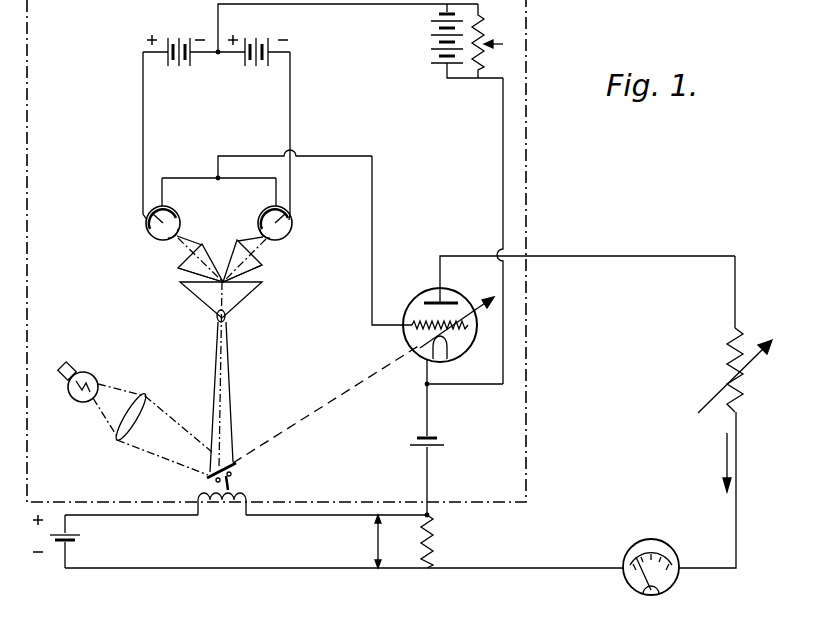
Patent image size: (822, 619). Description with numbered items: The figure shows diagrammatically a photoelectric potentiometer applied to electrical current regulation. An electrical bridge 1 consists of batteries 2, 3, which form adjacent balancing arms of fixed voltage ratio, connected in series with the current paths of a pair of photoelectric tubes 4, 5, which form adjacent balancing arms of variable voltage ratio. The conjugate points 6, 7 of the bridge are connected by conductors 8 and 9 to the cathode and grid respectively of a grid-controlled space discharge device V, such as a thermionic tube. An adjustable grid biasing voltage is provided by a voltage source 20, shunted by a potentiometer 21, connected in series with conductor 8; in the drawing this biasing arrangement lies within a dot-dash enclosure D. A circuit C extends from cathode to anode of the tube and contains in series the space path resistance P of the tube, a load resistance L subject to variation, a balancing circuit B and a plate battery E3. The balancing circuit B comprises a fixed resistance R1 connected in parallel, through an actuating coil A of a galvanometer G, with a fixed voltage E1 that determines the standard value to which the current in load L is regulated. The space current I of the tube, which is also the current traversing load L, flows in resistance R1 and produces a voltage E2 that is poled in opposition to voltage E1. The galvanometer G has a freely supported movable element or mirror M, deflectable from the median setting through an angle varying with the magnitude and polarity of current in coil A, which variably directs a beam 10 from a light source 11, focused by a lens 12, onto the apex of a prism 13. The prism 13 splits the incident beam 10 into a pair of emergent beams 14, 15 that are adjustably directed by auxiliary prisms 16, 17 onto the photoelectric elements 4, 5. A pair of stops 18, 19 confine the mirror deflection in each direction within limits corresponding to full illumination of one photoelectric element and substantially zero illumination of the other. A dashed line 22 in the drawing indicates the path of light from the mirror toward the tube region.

The electrical bridge 1 is at (143, 118).
The battery 2 is at (182, 62).
The battery 3 is at (256, 62).
The photoelectric tube 4 is at (146, 222).
The photoelectric tube 5 is at (293, 222).
The conjugate point 6 is at (218, 56).
The conjugate point 7 is at (218, 180).
The conductor 8 is at (503, 131).
The conductor 9 is at (372, 183).
The beam 10 is at (228, 354).
The light source 11 is at (92, 375).
The lens 12 is at (142, 400).
The prism 13 is at (240, 300).
The emergent beam 14 is at (191, 251).
The emergent beam 15 is at (262, 245).
The auxiliary prism 16 is at (200, 264).
The auxiliary prism 17 is at (258, 267).
The stop 18 is at (206, 480).
The stop 19 is at (269, 468).
The voltage source 20 is at (428, 44).
The potentiometer 21 is at (490, 34).
The reflected light beam 22 is at (330, 397).
The actuating coil A is at (222, 506).
The balancing circuit B is at (206, 558).
The circuit C is at (594, 270).
The enclosure D is at (526, 30).
The fixed voltage E1 is at (86, 540).
The voltage E2 is at (371, 541).
The plate battery E3 is at (446, 440).
The galvanometer G is at (238, 478).
The mirror M is at (236, 468).
The load resistance L is at (735, 370).
The space current I is at (707, 490).
The space path resistance P is at (458, 306).
The grid-controlled space discharge device V is at (424, 292).
The fixed resistance R1 is at (434, 532).